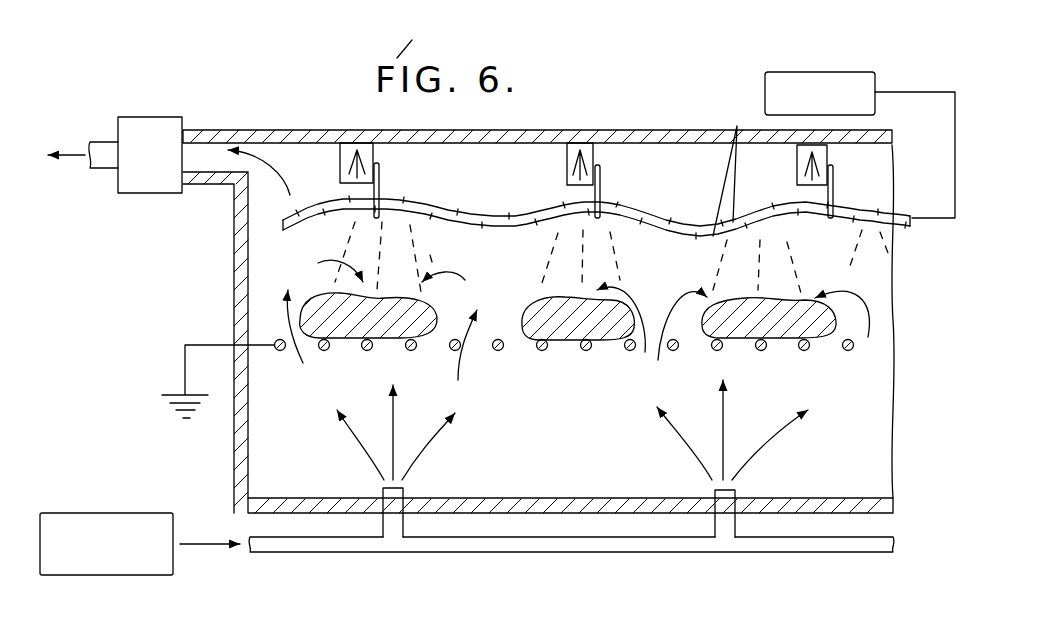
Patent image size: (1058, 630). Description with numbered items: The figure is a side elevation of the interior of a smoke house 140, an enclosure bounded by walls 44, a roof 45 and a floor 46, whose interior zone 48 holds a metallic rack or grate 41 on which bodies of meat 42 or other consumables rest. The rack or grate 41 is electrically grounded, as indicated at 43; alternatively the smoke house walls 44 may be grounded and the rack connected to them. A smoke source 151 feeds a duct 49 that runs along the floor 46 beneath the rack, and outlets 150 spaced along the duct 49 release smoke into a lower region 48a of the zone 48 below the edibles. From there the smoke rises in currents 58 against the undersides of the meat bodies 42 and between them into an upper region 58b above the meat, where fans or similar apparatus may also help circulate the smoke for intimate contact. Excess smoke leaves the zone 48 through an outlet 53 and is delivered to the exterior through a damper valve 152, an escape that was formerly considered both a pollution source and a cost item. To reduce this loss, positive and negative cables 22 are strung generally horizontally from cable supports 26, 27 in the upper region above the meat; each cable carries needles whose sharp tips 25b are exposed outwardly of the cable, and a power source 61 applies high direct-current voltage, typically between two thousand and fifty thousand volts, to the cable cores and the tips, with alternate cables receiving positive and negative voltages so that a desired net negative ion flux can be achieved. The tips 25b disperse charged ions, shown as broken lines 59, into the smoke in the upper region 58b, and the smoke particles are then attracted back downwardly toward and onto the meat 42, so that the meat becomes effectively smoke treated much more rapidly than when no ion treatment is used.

The damper valve 152 is at (133, 118).
The outlet 53 is at (200, 148).
The cable support 26 is at (358, 163).
The cables 22 is at (517, 212).
The cable support 27 is at (600, 170).
The roof 45 is at (677, 130).
The needle tips 25b is at (735, 168).
The power source 61 is at (818, 72).
The charged ions 59 is at (385, 245).
The upper region 58b is at (378, 282).
The smoke house walls 44 is at (234, 244).
The smoke house 140 is at (232, 290).
The electrical ground 43 is at (183, 362).
The bodies of meat 42 is at (352, 338).
The rack or grate 41 is at (850, 351).
The smoke currents 58 is at (393, 452).
The floor 46 is at (860, 498).
The outlets 150 is at (395, 510).
The duct 49 is at (567, 545).
The smoke source 151 is at (97, 568).
The interior zone 48 is at (521, 395).
The lower region 48a is at (547, 483).